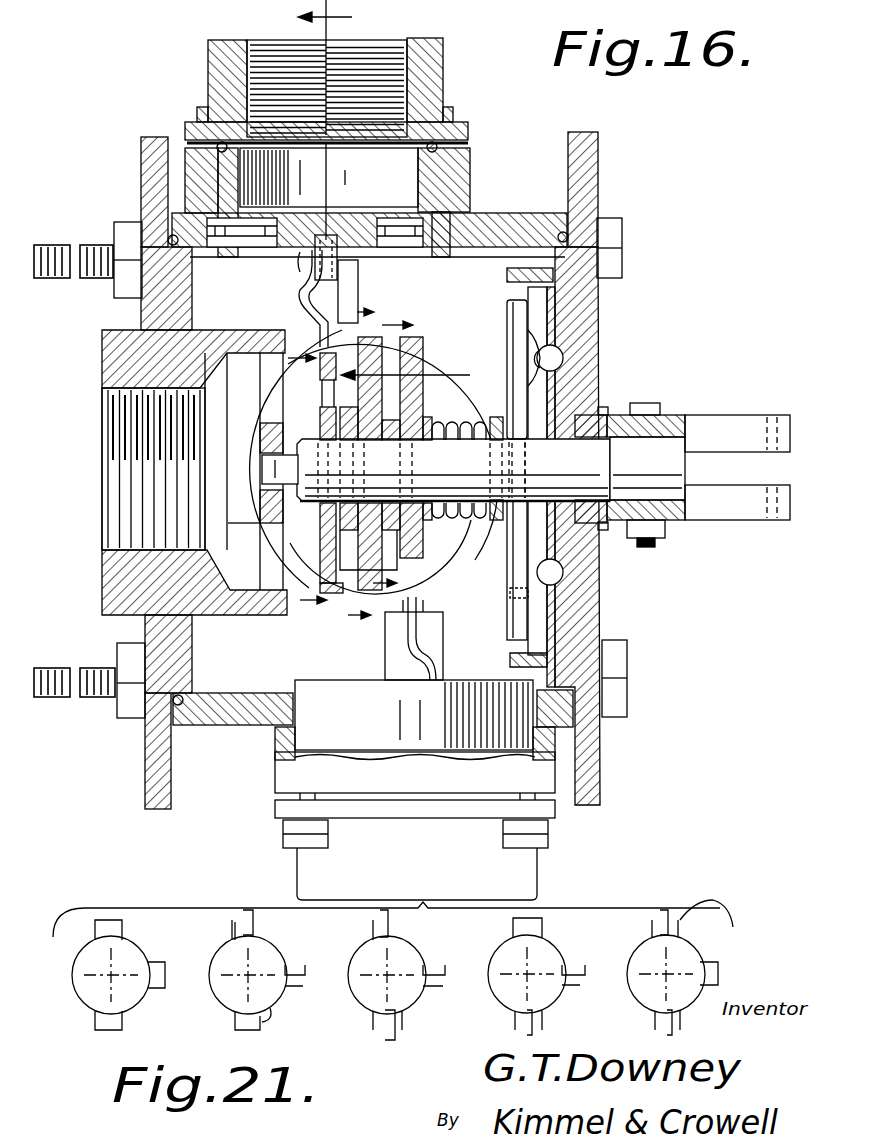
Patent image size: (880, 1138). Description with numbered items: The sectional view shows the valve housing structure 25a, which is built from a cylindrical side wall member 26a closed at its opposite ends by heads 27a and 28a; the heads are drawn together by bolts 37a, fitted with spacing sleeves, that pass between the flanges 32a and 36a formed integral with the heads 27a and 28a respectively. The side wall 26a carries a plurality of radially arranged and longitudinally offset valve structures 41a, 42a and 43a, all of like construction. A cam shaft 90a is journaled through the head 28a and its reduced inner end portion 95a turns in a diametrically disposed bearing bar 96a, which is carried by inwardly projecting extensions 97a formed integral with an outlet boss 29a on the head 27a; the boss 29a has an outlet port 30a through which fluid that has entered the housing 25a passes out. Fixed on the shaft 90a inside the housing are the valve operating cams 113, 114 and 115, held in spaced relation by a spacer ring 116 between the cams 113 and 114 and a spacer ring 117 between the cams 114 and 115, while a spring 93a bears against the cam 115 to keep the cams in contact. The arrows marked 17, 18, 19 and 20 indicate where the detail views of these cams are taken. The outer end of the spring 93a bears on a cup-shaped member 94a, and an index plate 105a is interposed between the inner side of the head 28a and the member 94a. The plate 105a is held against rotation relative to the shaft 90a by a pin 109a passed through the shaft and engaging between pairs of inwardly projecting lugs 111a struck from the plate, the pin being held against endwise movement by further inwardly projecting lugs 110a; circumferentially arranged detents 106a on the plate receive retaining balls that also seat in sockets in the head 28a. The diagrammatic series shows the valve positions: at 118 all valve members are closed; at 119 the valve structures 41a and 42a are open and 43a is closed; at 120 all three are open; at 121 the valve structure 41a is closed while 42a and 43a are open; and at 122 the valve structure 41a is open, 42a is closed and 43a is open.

In FIG. 16, the direction arrow of movement 17 is at (399, 198).
In FIG. 16, the direction arrow 18 is at (393, 449).
In FIG. 16, the direction arrow 19 is at (356, 476).
In FIG. 16, the direction arrow 20 is at (307, 488).
In FIG. 16, the valve housing structure 25a is at (494, 214).
In FIG. 16, the cylindrical side wall member 26a is at (520, 213).
In FIG. 16, the head 27a is at (141, 318).
In FIG. 16, the head 28a is at (599, 318).
In FIG. 16, the outlet boss 29a is at (203, 338).
In FIG. 16, the outlet port 30a is at (120, 492).
In FIG. 16, the flange 32a is at (142, 185).
In FIG. 16, the flange 36a is at (592, 170).
In FIG. 16, the bolts 37a is at (622, 243).
In FIG. 16, the valve structure 41a is at (469, 163).
In FIG. 21, the valve structure 41a is at (260, 930).
In FIG. 16, the valve structure 42a is at (429, 369).
In FIG. 21, the valve structure 42a is at (295, 963).
In FIG. 16, the valve structure 43a is at (450, 682).
In FIG. 21, the valve structure 43a is at (262, 1025).
In FIG. 16, the cam shaft 90a is at (480, 514).
In FIG. 16, the spring 93a is at (447, 514).
In FIG. 16, the cup-shaped member 94a is at (548, 380).
In FIG. 16, the reduced inner end portion 95a is at (262, 492).
In FIG. 16, the bearing bar 96a is at (270, 556).
In FIG. 16, the inwardly projecting extensions 97a is at (250, 605).
In FIG. 16, the index plate 105a is at (548, 622).
In FIG. 16, the detents 106a is at (533, 572).
In FIG. 16, the pin 109a is at (560, 397).
In FIG. 16, the inwardly projecting lugs 110a is at (552, 269).
In FIG. 16, the inwardly projecting lugs 111a is at (507, 348).
In FIG. 16, the valve operating cam 113 is at (330, 596).
In FIG. 16, the valve operating cam 114 is at (370, 338).
In FIG. 16, the valve operating cam 115 is at (415, 338).
In FIG. 16, the spacer ring 116 is at (320, 410).
In FIG. 16, the spacer ring 117 is at (393, 428).
In FIG. 21, the valve position 118 is at (128, 945).
In FIG. 21, the valve position 119 is at (222, 940).
In FIG. 21, the valve position 120 is at (358, 1000).
In FIG. 21, the valve position 121 is at (553, 942).
In FIG. 21, the valve position 122 is at (716, 902).